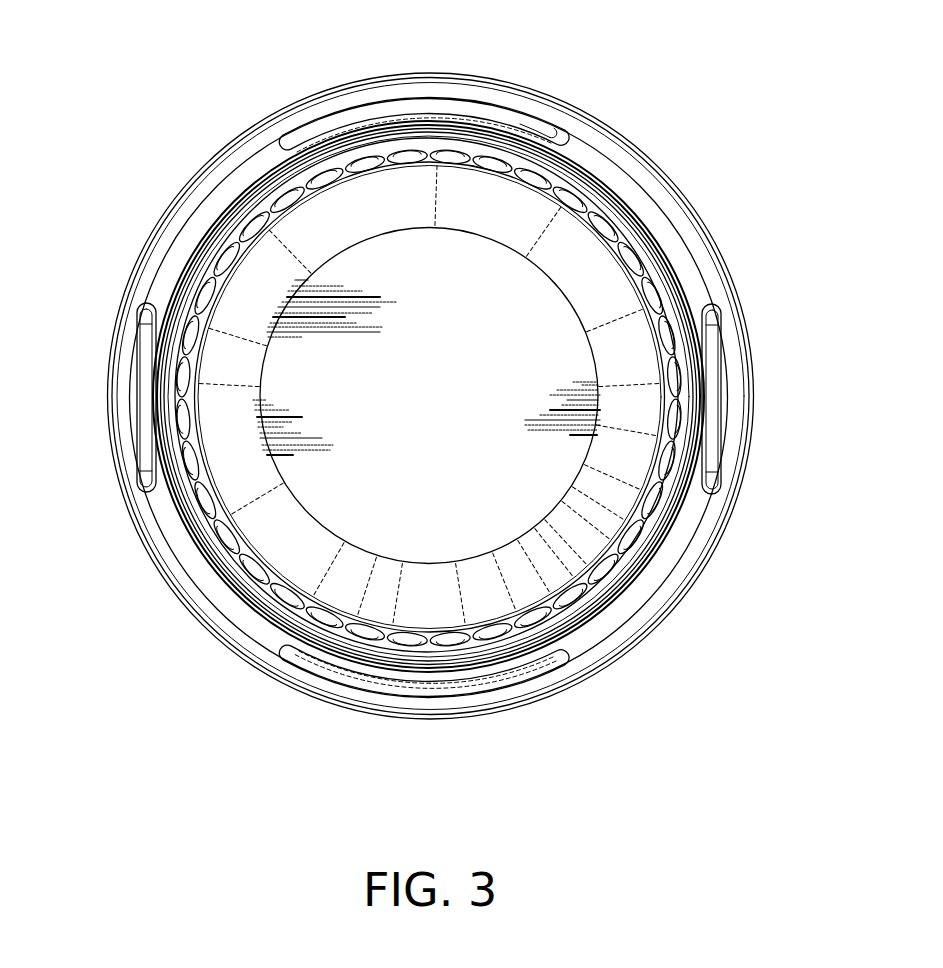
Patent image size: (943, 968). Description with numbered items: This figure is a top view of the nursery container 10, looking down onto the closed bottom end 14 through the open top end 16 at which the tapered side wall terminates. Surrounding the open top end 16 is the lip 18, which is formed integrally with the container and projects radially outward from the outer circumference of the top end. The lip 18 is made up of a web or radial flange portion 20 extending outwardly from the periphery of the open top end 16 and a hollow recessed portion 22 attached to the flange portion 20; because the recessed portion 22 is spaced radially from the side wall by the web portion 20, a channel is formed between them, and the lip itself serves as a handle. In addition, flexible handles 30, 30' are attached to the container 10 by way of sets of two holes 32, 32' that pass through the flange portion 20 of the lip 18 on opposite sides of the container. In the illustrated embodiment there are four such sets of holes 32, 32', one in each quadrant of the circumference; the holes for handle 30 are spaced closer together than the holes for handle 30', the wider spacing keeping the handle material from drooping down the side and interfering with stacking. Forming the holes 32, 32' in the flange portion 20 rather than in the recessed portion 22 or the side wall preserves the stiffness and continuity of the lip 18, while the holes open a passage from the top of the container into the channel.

The nursery container 10 is at (432, 402).
The closed bottom end 14 is at (372, 462).
The open top end 16 is at (566, 256).
The lip 18 is at (692, 212).
The web or radial flange portion 20 is at (582, 643).
The recessed portion 22 is at (673, 600).
The flexible handle 30 is at (430, 398).
The flexible handle 30' is at (424, 402).
The holes 32 is at (760, 392).
The holes 32' is at (574, 93).